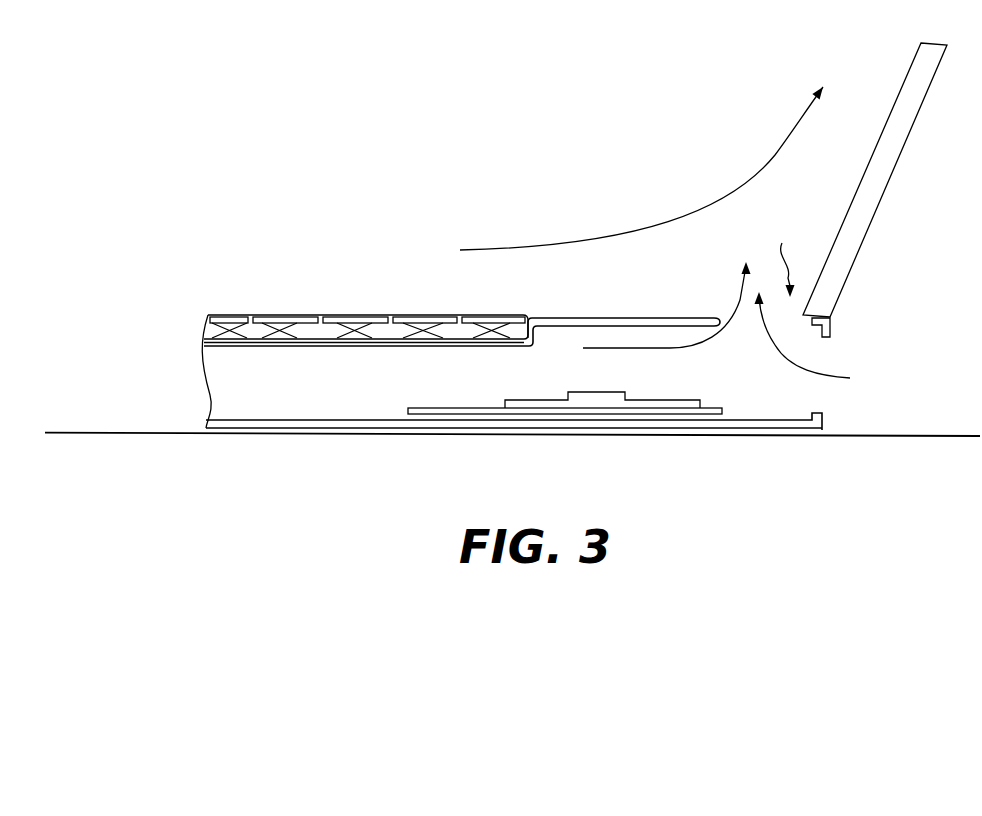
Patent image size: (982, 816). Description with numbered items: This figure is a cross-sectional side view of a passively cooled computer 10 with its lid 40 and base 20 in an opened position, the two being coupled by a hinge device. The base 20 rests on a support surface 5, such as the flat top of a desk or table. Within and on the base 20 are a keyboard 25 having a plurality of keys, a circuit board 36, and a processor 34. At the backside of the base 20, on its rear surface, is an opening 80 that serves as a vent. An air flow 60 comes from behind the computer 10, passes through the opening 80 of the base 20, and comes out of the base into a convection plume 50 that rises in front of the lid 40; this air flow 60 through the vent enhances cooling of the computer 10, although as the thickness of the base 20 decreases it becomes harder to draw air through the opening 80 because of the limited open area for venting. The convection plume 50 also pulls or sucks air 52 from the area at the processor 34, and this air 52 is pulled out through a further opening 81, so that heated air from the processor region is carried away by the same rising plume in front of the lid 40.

The support surface 5 is at (118, 437).
The computer 10 is at (247, 162).
The base 20 is at (584, 317).
The keyboard 25 is at (213, 298).
The processor 34 is at (540, 400).
The circuit board 36 is at (420, 408).
The lid 40 is at (848, 275).
The convection plume 50 is at (772, 163).
The air 52 is at (680, 349).
The air flow 60 is at (848, 382).
The opening 80 is at (873, 347).
The opening 81 is at (781, 257).